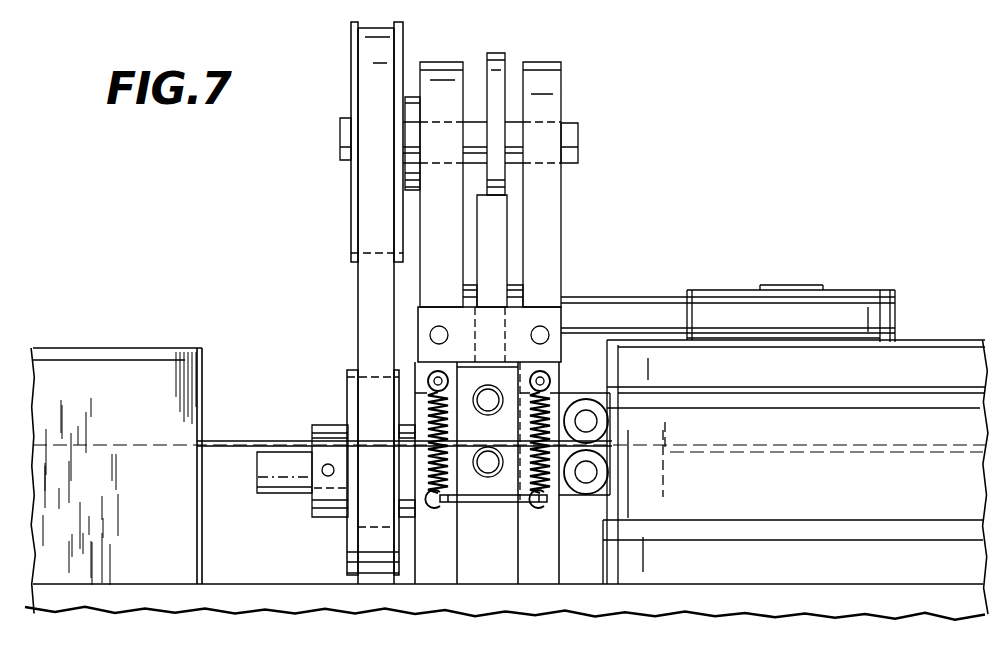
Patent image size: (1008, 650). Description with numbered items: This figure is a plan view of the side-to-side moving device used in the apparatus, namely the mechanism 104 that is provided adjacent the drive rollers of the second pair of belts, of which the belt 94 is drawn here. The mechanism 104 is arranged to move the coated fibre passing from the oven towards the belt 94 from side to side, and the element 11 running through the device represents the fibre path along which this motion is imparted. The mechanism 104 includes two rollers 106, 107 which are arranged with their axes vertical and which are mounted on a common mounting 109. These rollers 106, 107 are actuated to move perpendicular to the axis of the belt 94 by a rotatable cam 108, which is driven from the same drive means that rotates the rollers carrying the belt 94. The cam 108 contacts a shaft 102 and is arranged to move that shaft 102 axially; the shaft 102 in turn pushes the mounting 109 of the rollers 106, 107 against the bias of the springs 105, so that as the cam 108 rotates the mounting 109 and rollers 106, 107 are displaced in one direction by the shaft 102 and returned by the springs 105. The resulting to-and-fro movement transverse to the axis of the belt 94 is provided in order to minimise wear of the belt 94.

The rod 11 is at (277, 443).
The belt 94 is at (855, 428).
The shaft 102 is at (496, 243).
The mechanism 104 is at (577, 282).
The springs 105 is at (530, 424).
The roller 106 is at (587, 399).
The roller 107 is at (577, 488).
The rotatable cam 108 is at (497, 177).
The mounting 109 is at (488, 482).